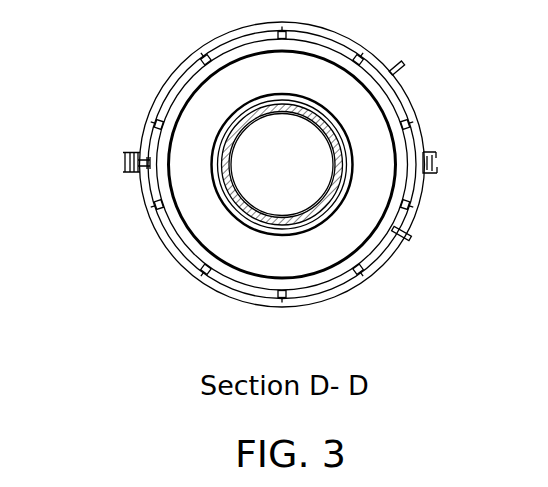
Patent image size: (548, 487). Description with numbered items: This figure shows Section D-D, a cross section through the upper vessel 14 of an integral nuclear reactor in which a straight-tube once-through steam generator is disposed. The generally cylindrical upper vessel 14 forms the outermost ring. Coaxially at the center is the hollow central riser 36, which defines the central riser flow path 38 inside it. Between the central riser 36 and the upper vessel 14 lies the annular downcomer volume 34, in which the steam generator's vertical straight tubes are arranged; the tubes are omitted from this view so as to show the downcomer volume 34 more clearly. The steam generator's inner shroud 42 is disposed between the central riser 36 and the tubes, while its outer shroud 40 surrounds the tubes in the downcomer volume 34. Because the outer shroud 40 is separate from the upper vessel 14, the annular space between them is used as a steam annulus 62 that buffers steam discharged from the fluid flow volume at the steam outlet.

The upper vessel 14 is at (165, 74).
The annular downcomer volume 34 is at (375, 130).
The hollow central riser 36 is at (222, 140).
The central riser flow path 38 is at (278, 175).
The outer shroud 40 is at (367, 272).
The inner shroud 42 is at (222, 210).
The steam annulus 62 is at (405, 225).